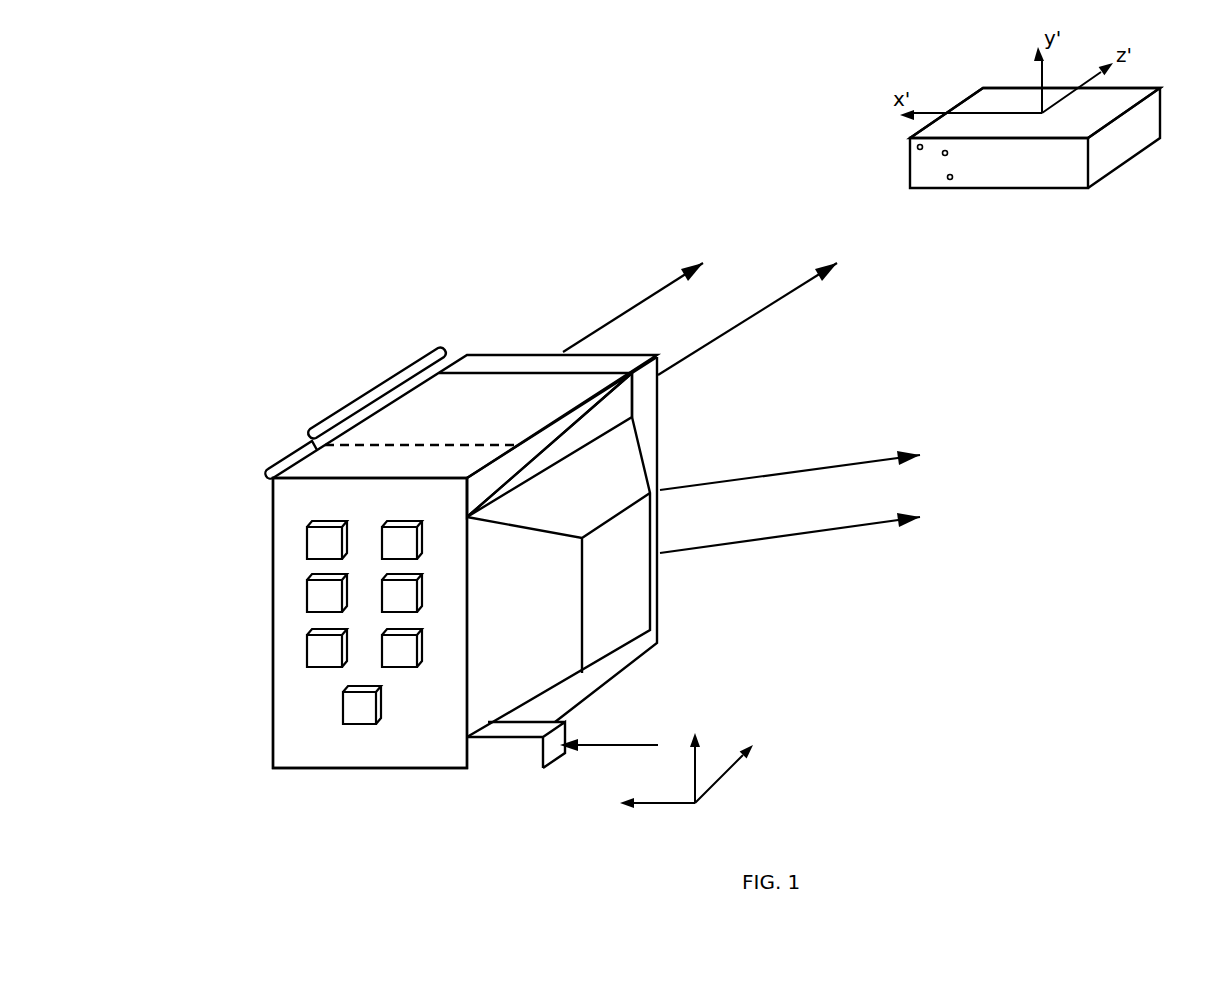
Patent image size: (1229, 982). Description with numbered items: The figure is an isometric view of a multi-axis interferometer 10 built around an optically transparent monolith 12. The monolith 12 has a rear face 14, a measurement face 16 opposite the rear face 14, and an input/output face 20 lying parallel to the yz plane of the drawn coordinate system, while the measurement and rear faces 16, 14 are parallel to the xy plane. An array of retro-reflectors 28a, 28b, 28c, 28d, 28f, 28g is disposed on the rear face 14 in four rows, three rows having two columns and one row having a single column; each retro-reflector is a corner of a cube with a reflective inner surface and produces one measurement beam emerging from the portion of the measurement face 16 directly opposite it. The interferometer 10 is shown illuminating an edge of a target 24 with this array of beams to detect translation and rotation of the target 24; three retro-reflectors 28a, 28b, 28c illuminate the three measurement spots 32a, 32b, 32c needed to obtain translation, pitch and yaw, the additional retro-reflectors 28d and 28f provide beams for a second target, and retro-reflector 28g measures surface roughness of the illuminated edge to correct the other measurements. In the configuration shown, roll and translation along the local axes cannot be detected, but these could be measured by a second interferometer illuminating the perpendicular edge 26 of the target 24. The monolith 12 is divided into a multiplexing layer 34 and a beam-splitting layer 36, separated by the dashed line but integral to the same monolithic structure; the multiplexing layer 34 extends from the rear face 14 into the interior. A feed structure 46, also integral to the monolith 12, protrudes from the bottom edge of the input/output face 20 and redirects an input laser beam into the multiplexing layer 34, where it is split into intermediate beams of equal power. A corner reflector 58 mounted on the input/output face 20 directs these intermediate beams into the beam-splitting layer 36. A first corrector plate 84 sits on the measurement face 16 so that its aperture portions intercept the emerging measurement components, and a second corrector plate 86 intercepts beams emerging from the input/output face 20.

The multi-axis interferometer 10 is at (246, 336).
The optically transparent monolith 12 is at (250, 545).
The rear face 14 is at (270, 708).
The measurement face 16 is at (517, 356).
The input/output (I/O) face 20 is at (620, 395).
The target 24 is at (1095, 124).
The perpendicular edge 26 is at (1145, 128).
The retro-reflector 28a is at (307, 533).
The retro-reflector 28b is at (420, 538).
The retro-reflector 28c is at (307, 598).
The retro-reflector 28d is at (307, 650).
The retro-reflector 28f is at (420, 650).
The retro-reflector 28g is at (358, 727).
The measurement spot 32a is at (920, 147).
The measurement spot 32b is at (945, 153).
The measurement spot 32c is at (950, 177).
The multiplexing layer 34 is at (285, 458).
The beam-splitting layer 36 is at (357, 399).
The feed structure 46 is at (508, 772).
The corner reflector 58 is at (635, 585).
The first corrector plate 84 is at (477, 358).
The second corrector plate 86 is at (650, 432).